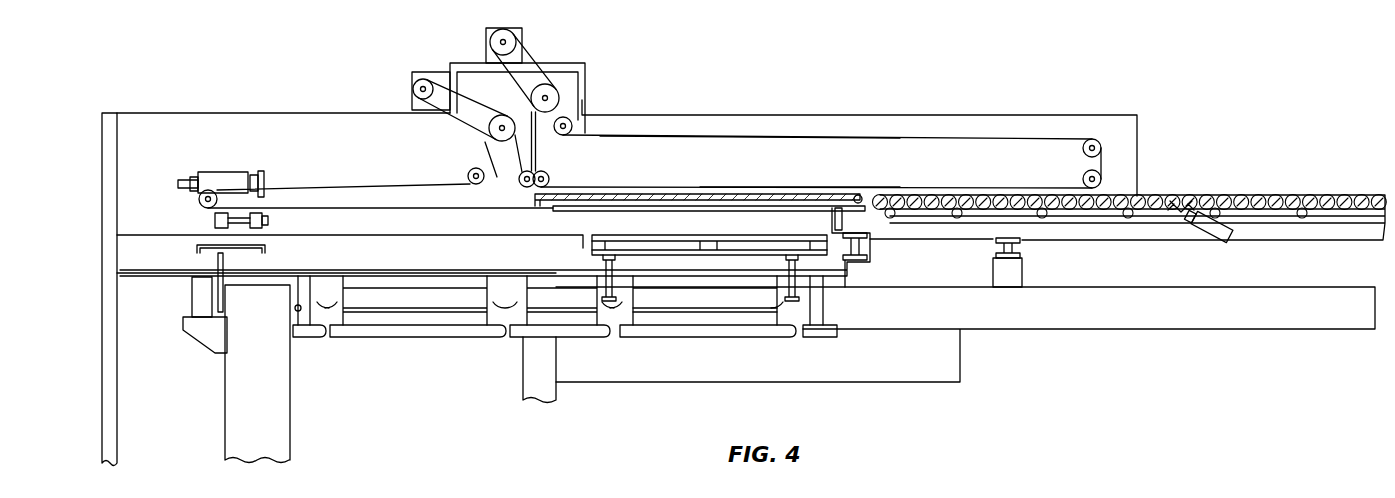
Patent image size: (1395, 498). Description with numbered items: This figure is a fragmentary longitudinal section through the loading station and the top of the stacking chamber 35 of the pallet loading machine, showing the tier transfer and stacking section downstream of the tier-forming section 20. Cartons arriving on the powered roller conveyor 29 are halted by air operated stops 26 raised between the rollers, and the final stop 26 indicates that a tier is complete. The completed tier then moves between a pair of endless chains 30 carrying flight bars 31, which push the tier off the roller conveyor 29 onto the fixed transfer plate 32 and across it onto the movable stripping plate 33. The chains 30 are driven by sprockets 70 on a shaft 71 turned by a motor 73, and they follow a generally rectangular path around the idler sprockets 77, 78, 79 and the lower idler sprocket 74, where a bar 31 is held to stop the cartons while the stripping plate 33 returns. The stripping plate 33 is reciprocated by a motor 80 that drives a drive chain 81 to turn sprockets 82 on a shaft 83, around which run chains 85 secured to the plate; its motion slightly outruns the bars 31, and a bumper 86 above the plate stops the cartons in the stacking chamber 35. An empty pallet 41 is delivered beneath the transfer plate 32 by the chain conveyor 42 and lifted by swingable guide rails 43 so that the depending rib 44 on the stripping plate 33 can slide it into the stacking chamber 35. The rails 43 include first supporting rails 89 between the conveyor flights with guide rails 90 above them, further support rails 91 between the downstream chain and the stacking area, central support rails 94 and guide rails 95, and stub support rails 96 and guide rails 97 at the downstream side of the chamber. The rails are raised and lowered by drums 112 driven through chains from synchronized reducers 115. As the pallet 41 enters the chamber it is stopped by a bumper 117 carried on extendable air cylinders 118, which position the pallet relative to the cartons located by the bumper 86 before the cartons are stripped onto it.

The tier-forming section 20 is at (1126, 101).
The air operated stop 26 is at (1172, 214).
The powered roller conveyor 29 is at (1299, 185).
The endless chains 30 is at (940, 137).
The flight bar 31 is at (720, 137).
The transfer plate 32 is at (855, 195).
The stripping plate 33 is at (765, 193).
The stacking chamber 35 is at (304, 407).
The empty pallet 41 is at (675, 235).
The pallet inserting conveyor 42 is at (800, 337).
The guide rails 43 is at (769, 350).
The depending rib 44 is at (850, 242).
The drive sprockets 70 is at (548, 92).
The shaft 71 is at (560, 98).
The motor 73 is at (513, 34).
The lower idler sprocket 74 is at (570, 120).
The idler sprocket 77 is at (1093, 138).
The idler sprocket 78 is at (1101, 177).
The idler sprocket 79 is at (549, 178).
The motor 80 is at (421, 72).
The drive chain 81 is at (448, 121).
The sprockets 82 is at (490, 136).
The shaft 83 is at (506, 125).
The chains 85 is at (470, 205).
The bumper 86 is at (262, 172).
The first supporting rails 89 is at (724, 337).
The guide rail 90 is at (688, 312).
The support rails 91 is at (592, 337).
The support rails 94 is at (452, 337).
The guide rails 95 is at (410, 312).
The stub support rails 96 is at (306, 337).
The guide rails 97 is at (293, 311).
The drums 112 is at (217, 258).
The reducers 115 is at (192, 296).
The bumper 117 is at (270, 221).
The air cylinders 118 is at (214, 220).